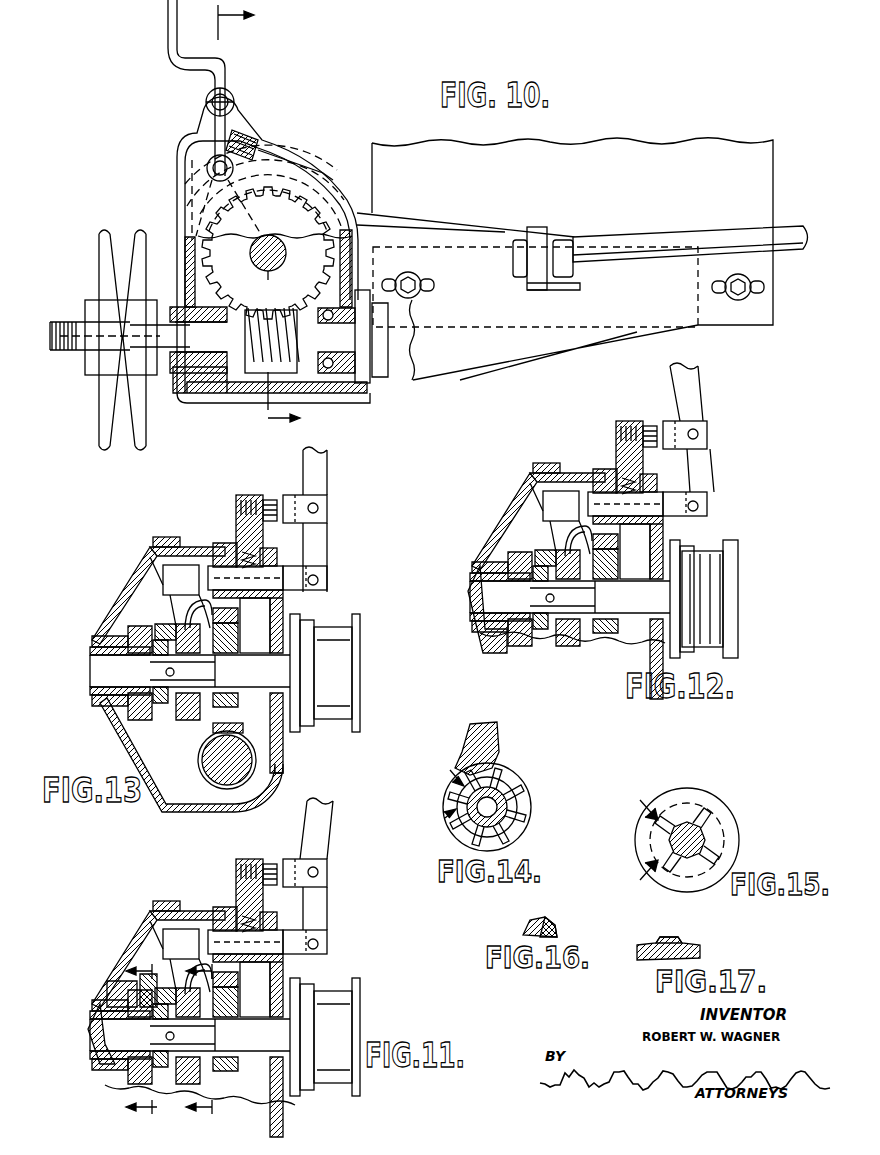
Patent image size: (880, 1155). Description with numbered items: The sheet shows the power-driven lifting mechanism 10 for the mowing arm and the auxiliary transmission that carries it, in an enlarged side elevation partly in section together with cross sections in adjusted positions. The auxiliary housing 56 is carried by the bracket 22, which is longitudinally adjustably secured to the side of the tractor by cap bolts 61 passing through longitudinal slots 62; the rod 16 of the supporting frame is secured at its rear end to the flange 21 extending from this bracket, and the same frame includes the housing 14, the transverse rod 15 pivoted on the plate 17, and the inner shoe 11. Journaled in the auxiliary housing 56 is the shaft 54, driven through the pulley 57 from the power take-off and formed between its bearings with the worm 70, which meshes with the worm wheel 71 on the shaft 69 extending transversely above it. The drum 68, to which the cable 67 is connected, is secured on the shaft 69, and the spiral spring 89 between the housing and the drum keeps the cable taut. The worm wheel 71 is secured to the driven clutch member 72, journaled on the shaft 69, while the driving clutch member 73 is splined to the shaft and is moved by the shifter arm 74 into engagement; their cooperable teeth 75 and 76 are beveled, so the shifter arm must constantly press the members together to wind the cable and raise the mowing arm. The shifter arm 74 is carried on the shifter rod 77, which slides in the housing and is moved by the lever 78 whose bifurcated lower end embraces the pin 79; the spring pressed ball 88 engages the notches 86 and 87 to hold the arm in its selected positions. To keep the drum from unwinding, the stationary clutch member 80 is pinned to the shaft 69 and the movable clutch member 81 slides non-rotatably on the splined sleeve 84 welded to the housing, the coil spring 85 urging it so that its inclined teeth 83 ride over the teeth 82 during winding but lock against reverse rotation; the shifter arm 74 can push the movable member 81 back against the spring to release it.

In FIG. 10, the lifting mechanism 10 is at (340, 154).
In FIG. 13, the lifting mechanism 10 is at (287, 781).
In FIG. 12, the lifting mechanism 10 is at (575, 436).
In FIG. 11, the lifting mechanism 10 is at (199, 872).
In FIG. 10, the inner shoe 11 is at (270, 219).
In FIG. 11, the housing 14 is at (139, 1047).
In FIG. 11, the rod 15 is at (199, 1047).
In FIG. 10, the rod 16 is at (678, 250).
In FIG. 14, the rod 16 is at (441, 792).
In FIG. 15, the plate 17 is at (648, 849).
In FIG. 10, the flange 21 is at (548, 240).
In FIG. 10, the bracket 22 is at (752, 320).
In FIG. 10, the shaft 54 is at (328, 373).
In FIG. 13, the shaft 54 is at (216, 770).
In FIG. 10, the auxiliary housing 56 is at (215, 395).
In FIG. 13, the auxiliary housing 56 is at (236, 804).
In FIG. 12, the auxiliary housing 56 is at (566, 569).
In FIG. 11, the auxiliary housing 56 is at (191, 1007).
In FIG. 10, the pulley 57 is at (102, 432).
In FIG. 10, the cap bolts 61 is at (418, 284).
In FIG. 10, the slots 62 is at (436, 288).
In FIG. 13, the cable 67 is at (313, 675).
In FIG. 12, the cable 67 is at (728, 599).
In FIG. 11, the cable 67 is at (353, 1037).
In FIG. 13, the drum 68 is at (338, 636).
In FIG. 12, the drum 68 is at (729, 599).
In FIG. 11, the drum 68 is at (346, 1023).
In FIG. 10, the shaft 69 is at (268, 253).
In FIG. 13, the shaft 69 is at (246, 672).
In FIG. 12, the shaft 69 is at (570, 597).
In FIG. 11, the shaft 69 is at (190, 1035).
In FIG. 14, the shaft 69 is at (470, 814).
In FIG. 15, the shaft 69 is at (708, 840).
In FIG. 10, the worm 70 is at (255, 333).
In FIG. 13, the worm 70 is at (202, 762).
In FIG. 10, the worm wheel 71 is at (198, 334).
In FIG. 13, the worm wheel 71 is at (240, 620).
In FIG. 12, the worm wheel 71 is at (619, 540).
In FIG. 11, the worm wheel 71 is at (239, 980).
In FIG. 13, the driven clutch member 72 is at (222, 710).
In FIG. 12, the driven clutch member 72 is at (605, 615).
In FIG. 11, the driven clutch member 72 is at (236, 1050).
In FIG. 13, the driving clutch member 73 is at (186, 718).
In FIG. 12, the driving clutch member 73 is at (568, 616).
In FIG. 11, the driving clutch member 73 is at (178, 1060).
In FIG. 15, the driving clutch member 73 is at (680, 800).
In FIG. 17, the driving clutch member 73 is at (700, 950).
In FIG. 10, the shifter arm 74 is at (192, 203).
In FIG. 13, the shifter arm 74 is at (168, 606).
In FIG. 12, the shifter arm 74 is at (554, 518).
In FIG. 11, the shifter arm 74 is at (180, 930).
In FIG. 14, the shifter arm 74 is at (500, 737).
In FIG. 13, the teeth 75 is at (198, 615).
In FIG. 12, the teeth 75 is at (578, 541).
In FIG. 11, the teeth 75 is at (215, 1048).
In FIG. 13, the teeth 76 is at (198, 625).
In FIG. 12, the teeth 76 is at (545, 558).
In FIG. 11, the teeth 76 is at (177, 1045).
In FIG. 15, the teeth 76 is at (705, 824).
In FIG. 17, the teeth 76 is at (668, 937).
In FIG. 13, the shifter rod 77 is at (213, 570).
In FIG. 12, the shifter rod 77 is at (625, 504).
In FIG. 11, the shifter rod 77 is at (237, 944).
In FIG. 10, the lever 78 is at (168, 38).
In FIG. 13, the lever 78 is at (322, 479).
In FIG. 12, the lever 78 is at (704, 427).
In FIG. 11, the lever 78 is at (321, 864).
In FIG. 13, the pin 79 is at (320, 580).
In FIG. 12, the pin 79 is at (705, 502).
In FIG. 11, the pin 79 is at (313, 939).
In FIG. 13, the stationary clutch member 80 is at (158, 716).
In FIG. 12, the stationary clutch member 80 is at (540, 624).
In FIG. 11, the stationary clutch member 80 is at (162, 1050).
In FIG. 13, the movable clutch member 81 is at (132, 716).
In FIG. 12, the movable clutch member 81 is at (507, 624).
In FIG. 11, the movable clutch member 81 is at (111, 1051).
In FIG. 14, the movable clutch member 81 is at (520, 795).
In FIG. 16, the movable clutch member 81 is at (558, 930).
In FIG. 11, the teeth 82 is at (160, 990).
In FIG. 11, the teeth 83 is at (99, 994).
In FIG. 14, the teeth 83 is at (522, 812).
In FIG. 16, the teeth 83 is at (538, 920).
In FIG. 13, the splined sleeve 84 is at (95, 680).
In FIG. 12, the splined sleeve 84 is at (486, 597).
In FIG. 11, the splined sleeve 84 is at (101, 1041).
In FIG. 14, the splined sleeve 84 is at (516, 845).
In FIG. 13, the coil spring 85 is at (112, 634).
In FIG. 12, the coil spring 85 is at (484, 575).
In FIG. 11, the coil spring 85 is at (95, 1035).
In FIG. 13, the notch 86 is at (253, 573).
In FIG. 12, the notch 86 is at (637, 496).
In FIG. 11, the notch 86 is at (237, 936).
In FIG. 13, the notch 87 is at (278, 571).
In FIG. 12, the notch 87 is at (664, 493).
In FIG. 11, the notch 87 is at (271, 934).
In FIG. 13, the spring pressed ball 88 is at (240, 498).
In FIG. 12, the spring pressed ball 88 is at (647, 457).
In FIG. 11, the spring pressed ball 88 is at (265, 895).
In FIG. 10, the spiral spring 89 is at (270, 177).
In FIG. 13, the spiral spring 89 is at (283, 740).
In FIG. 12, the spiral spring 89 is at (687, 534).
In FIG. 11, the spiral spring 89 is at (292, 1105).